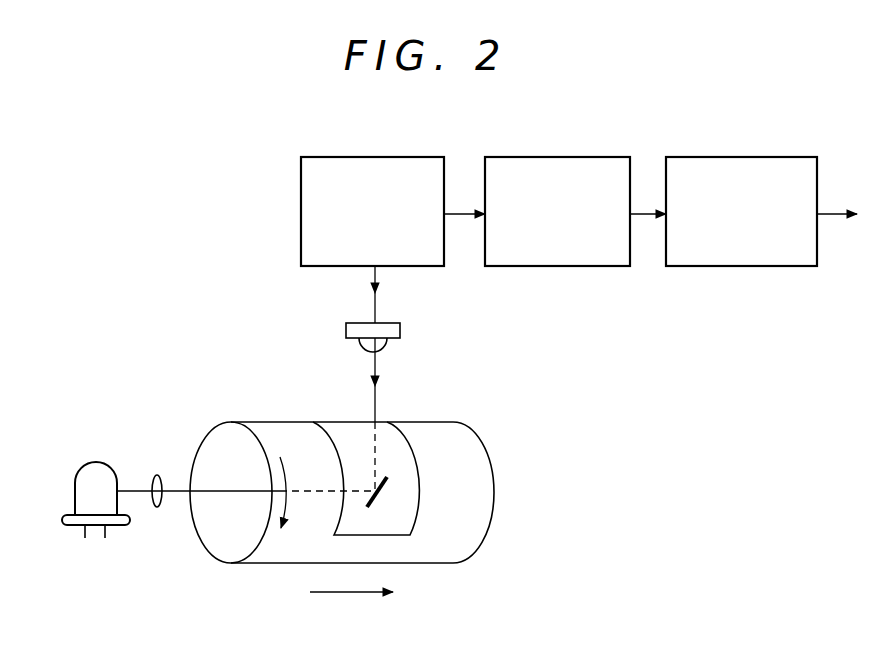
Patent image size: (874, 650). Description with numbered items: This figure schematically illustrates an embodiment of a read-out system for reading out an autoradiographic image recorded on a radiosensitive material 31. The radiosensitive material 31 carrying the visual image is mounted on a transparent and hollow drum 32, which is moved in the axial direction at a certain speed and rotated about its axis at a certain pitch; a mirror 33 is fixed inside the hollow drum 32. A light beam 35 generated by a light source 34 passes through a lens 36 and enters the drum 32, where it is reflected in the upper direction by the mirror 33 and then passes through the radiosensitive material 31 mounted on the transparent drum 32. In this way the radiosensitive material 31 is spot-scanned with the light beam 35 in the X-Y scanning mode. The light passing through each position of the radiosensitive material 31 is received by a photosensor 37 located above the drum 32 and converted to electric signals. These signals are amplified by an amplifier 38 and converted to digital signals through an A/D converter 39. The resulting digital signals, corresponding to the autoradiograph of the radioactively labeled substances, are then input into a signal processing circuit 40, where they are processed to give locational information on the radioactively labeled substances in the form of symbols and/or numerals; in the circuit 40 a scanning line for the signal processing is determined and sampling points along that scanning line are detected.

The radiosensitive material 31 is at (398, 523).
The drum 32 is at (296, 547).
The mirror 33 is at (390, 478).
The light source 34 is at (108, 462).
The light beam 35 is at (139, 493).
The lens 36 is at (158, 476).
The photosensor 37 is at (346, 331).
The amplifier 38 is at (372, 211).
The A/D converter 39 is at (557, 211).
The signal processing circuit 40 is at (741, 211).